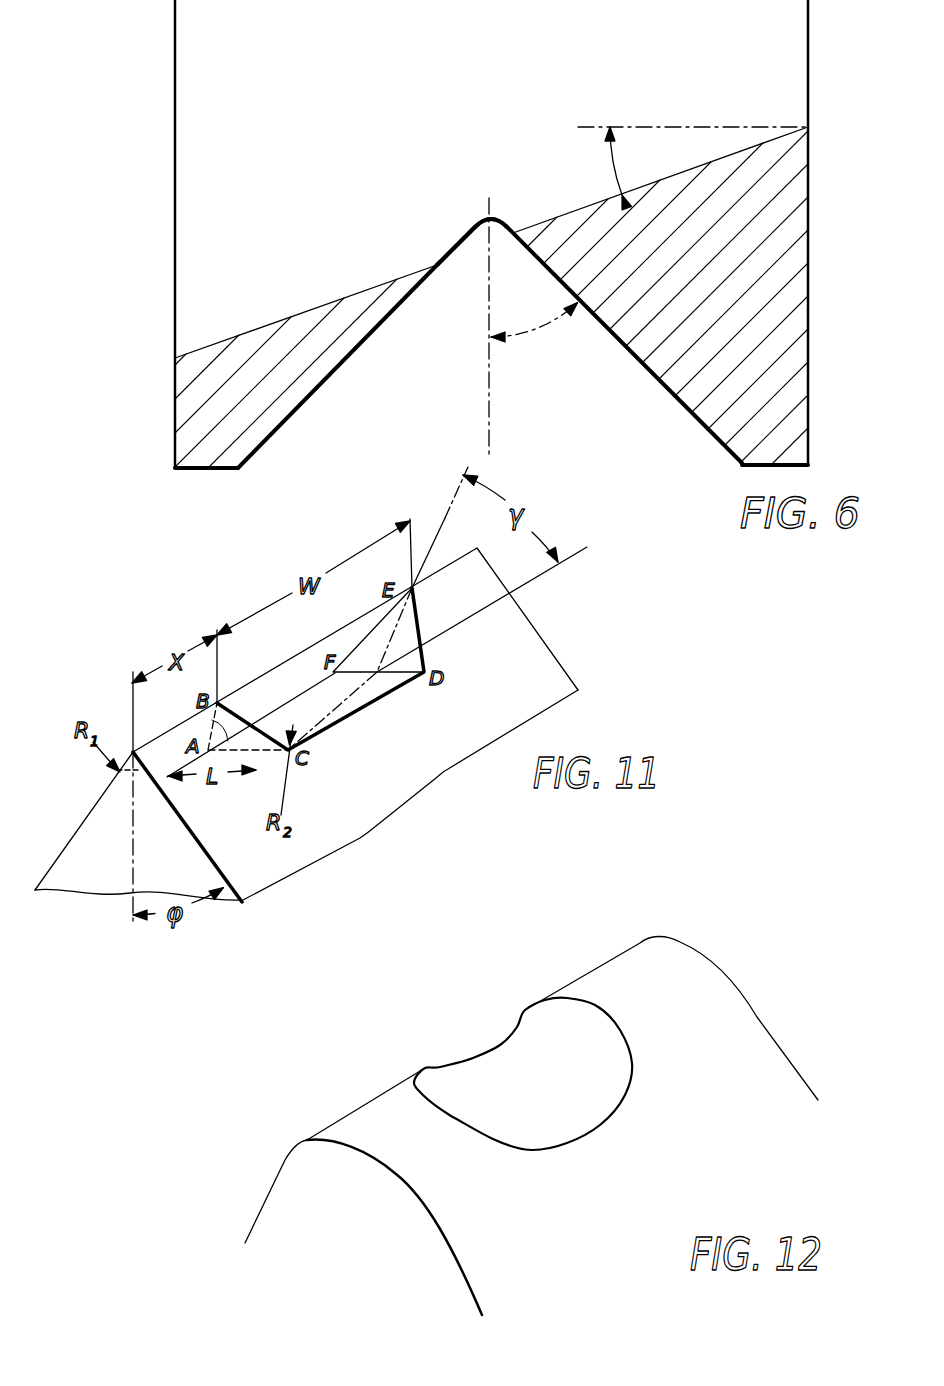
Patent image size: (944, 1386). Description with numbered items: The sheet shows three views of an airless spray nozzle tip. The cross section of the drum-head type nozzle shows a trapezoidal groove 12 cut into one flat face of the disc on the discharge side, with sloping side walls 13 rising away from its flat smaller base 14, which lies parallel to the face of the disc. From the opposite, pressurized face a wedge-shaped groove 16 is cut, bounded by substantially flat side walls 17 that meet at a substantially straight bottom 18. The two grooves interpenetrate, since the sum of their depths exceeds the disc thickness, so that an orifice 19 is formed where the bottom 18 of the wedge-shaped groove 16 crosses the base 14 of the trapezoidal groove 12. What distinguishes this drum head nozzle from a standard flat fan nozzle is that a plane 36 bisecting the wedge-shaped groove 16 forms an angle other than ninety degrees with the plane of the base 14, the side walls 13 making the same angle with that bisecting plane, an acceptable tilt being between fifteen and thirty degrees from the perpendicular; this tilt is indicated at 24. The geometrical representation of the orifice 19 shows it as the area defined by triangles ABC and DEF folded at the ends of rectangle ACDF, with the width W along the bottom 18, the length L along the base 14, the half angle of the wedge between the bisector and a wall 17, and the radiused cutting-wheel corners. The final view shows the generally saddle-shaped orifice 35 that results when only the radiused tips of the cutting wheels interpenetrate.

In FIG. 6, the trapezoidal groove 12 is at (155, 145).
In FIG. 6, the side walls of the trapezoidal groove 13 is at (793, 65).
In FIG. 6, the smaller base of the trapezoidal groove 14 is at (265, 323).
In FIG. 6, the wedge-shaped groove 16 is at (336, 437).
In FIG. 6, the side walls of the wedge-shaped groove 17 is at (362, 343).
In FIG. 6, the bottom of the wedge-shaped groove 18 is at (496, 218).
In FIG. 6, the orifice 19 is at (436, 237).
In FIG. 6, the rake angle 24 is at (643, 152).
In FIG. 6, the plane bisecting the wedge-shaped groove 36 is at (490, 377).
In FIG. 12, the orifice 35 is at (512, 1052).